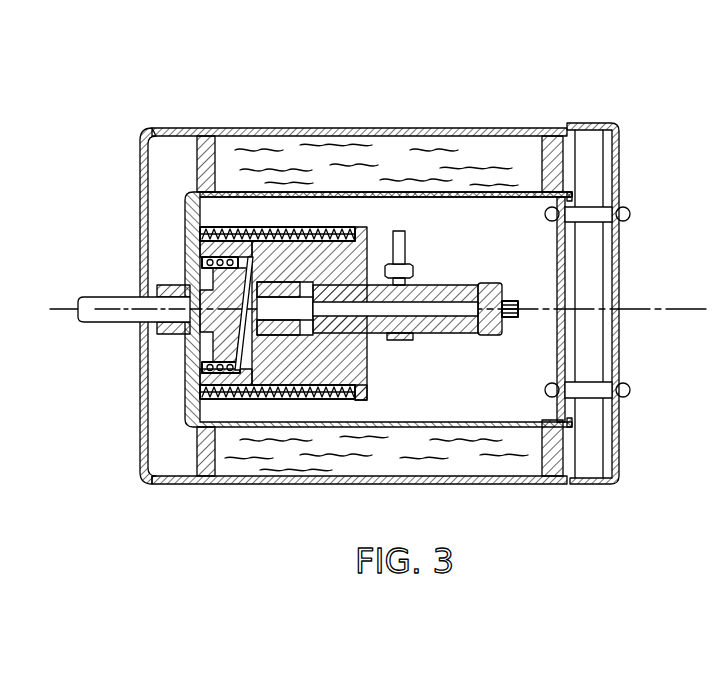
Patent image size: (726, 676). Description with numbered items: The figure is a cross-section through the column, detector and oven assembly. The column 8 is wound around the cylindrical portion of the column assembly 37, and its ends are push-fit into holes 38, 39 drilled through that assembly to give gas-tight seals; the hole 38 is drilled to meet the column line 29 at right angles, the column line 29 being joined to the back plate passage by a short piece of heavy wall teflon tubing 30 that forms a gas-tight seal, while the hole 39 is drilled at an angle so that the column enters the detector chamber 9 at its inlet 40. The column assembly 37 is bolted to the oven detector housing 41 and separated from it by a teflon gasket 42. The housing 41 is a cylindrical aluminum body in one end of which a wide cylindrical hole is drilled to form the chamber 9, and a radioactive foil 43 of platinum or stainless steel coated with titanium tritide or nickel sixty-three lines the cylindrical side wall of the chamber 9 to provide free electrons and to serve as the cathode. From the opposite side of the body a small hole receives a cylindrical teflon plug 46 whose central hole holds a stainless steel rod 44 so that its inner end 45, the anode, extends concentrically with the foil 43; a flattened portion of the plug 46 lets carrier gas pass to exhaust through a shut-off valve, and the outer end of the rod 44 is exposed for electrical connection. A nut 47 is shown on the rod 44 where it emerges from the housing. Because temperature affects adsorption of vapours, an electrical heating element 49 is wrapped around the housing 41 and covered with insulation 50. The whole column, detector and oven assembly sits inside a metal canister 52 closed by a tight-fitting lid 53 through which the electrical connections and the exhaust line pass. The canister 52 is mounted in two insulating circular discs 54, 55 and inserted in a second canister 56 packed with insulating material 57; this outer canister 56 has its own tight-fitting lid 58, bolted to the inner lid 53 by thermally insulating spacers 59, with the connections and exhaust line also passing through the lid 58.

The column 8 is at (222, 228).
The detector chamber 9 is at (292, 262).
The column line 29 is at (176, 293).
The heavy wall teflon tubing 30 is at (92, 300).
The column assembly 37 is at (207, 333).
The hole 38 is at (185, 257).
The hole 39 is at (240, 427).
The inlet 40 is at (318, 400).
The oven detector housing 41 is at (360, 338).
The teflon gasket 42 is at (245, 248).
The radioactive foil 43 is at (370, 398).
The rod 44 is at (403, 250).
The inner end 45 is at (377, 130).
The cylindrical plug 46 is at (470, 285).
The lock nut 47 is at (413, 270).
The electrical heating element 49 is at (265, 400).
The insulation 50 is at (293, 400).
The metal canister 52 is at (318, 194).
The lid 53 is at (563, 290).
The insulating circular disc 54 is at (190, 484).
The insulating circular disc 55 is at (557, 460).
The second canister 56 is at (490, 478).
The insulating material 57 is at (498, 130).
The lid 58 is at (617, 320).
The thermally insulating spacers 59 is at (590, 213).